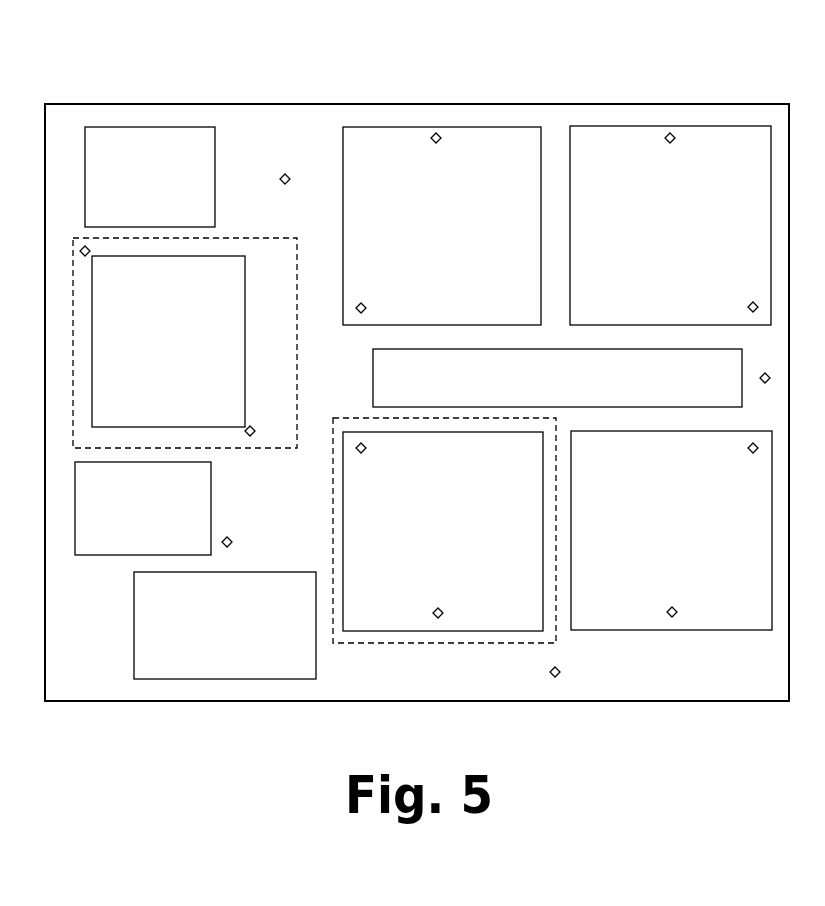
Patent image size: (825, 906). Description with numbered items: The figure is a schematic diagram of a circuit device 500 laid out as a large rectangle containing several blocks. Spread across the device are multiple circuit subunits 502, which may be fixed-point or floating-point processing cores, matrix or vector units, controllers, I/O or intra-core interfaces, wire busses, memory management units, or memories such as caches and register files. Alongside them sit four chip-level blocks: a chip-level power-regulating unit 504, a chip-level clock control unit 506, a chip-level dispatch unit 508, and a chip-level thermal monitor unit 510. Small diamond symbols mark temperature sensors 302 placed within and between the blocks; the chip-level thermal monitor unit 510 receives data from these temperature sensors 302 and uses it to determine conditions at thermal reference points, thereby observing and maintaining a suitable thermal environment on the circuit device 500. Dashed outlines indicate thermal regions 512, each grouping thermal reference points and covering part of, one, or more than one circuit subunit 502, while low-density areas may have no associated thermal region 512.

The circuit device 500 is at (462, 77).
The circuit subunit 502 is at (464, 232).
The chip-level power-regulating unit 504 is at (172, 187).
The chip-level clock control unit 506 is at (165, 520).
The chip-level dispatch unit 508 is at (190, 349).
The chip-level thermal monitor unit 510 is at (247, 636).
The thermal region 512 is at (258, 448).
The temperature sensor 302 is at (285, 173).